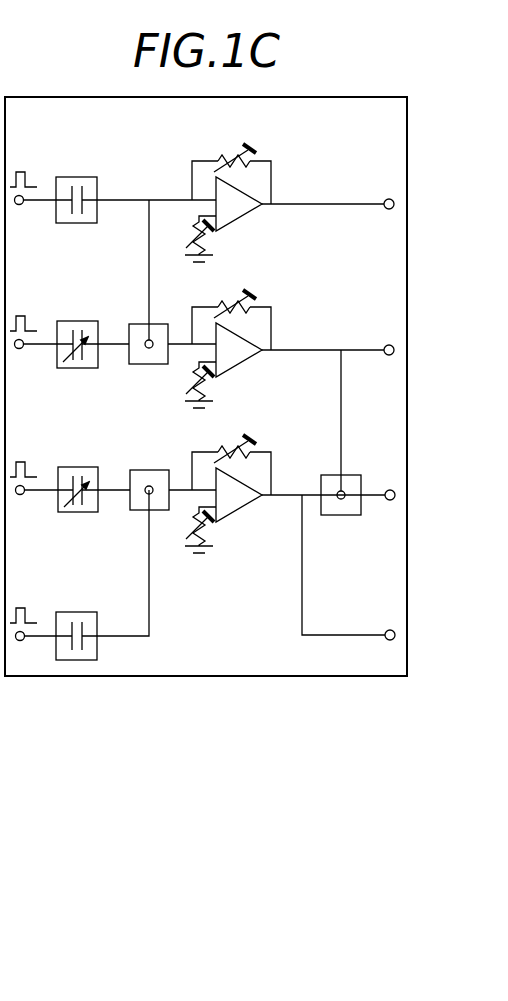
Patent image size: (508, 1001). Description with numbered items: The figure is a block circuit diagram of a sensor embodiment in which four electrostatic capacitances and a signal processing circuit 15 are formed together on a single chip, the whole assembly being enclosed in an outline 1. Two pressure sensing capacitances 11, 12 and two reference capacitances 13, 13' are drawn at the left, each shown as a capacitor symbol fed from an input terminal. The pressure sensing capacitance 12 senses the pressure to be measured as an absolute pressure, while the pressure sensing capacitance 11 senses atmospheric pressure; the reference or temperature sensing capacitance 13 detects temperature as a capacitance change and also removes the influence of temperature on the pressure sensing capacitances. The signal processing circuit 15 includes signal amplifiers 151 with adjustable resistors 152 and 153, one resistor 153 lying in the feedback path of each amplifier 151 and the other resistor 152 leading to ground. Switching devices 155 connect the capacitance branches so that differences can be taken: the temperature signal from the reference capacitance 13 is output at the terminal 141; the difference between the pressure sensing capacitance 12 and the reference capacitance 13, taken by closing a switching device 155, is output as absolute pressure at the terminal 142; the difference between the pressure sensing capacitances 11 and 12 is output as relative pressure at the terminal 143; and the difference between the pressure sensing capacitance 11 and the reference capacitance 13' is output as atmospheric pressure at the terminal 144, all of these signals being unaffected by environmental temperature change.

The signal processing circuit 1 is at (256, 677).
The pressure sensing capacitance 11 is at (58, 467).
The pressure sensing capacitance 12 is at (57, 321).
The reference or temperature sensing capacitance 13 is at (53, 180).
The reference capacitance 13' is at (79, 575).
The signal processing circuit 15 is at (198, 183).
The signal amplifier 151 is at (239, 204).
The adjustable resistor 152 is at (223, 240).
The adjustable resistor 153 is at (245, 168).
The switching device 155 is at (137, 324).
The terminal 141 is at (375, 229).
The terminal 142 is at (368, 397).
The terminal 143 is at (369, 544).
The terminal 144 is at (404, 610).